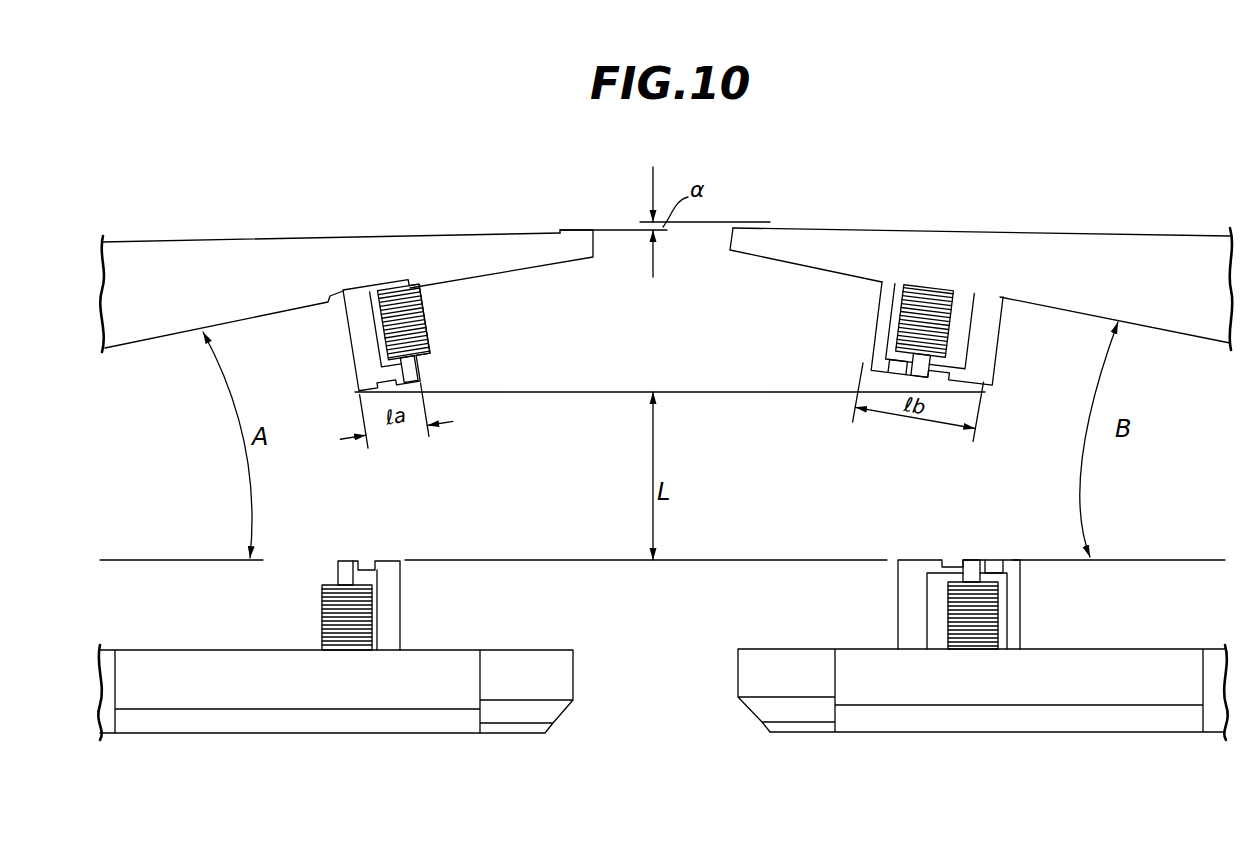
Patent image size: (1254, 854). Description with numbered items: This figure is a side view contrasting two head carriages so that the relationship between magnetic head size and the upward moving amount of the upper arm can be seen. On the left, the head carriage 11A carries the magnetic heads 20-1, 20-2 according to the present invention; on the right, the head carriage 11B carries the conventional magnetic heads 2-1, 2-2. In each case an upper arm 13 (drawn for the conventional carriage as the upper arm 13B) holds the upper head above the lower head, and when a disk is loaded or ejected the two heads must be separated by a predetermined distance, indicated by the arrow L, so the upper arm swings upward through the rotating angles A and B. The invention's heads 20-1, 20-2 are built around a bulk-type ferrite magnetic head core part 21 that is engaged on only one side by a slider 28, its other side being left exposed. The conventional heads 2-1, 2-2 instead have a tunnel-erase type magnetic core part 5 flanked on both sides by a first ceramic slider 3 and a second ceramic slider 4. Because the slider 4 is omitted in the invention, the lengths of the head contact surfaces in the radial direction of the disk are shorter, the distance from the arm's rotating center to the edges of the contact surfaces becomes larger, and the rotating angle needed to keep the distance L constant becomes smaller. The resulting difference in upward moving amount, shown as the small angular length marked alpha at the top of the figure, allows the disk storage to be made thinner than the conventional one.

The head carriage 11A is at (315, 229).
The head carriage 11B is at (968, 221).
The upper arm 13 is at (433, 247).
The upper arm 13B is at (1078, 245).
The magnetic head 20-1 is at (430, 325).
The magnetic head 20-2 is at (402, 623).
The slider 28 is at (358, 351).
The magnetic head core part 21 is at (420, 367).
The magnetic head 2-1 is at (1001, 336).
The magnetic head 2-2 is at (1022, 617).
The first ceramic slider 3 is at (982, 365).
The second ceramic slider 4 is at (882, 315).
The magnetic core part 5 is at (910, 377).